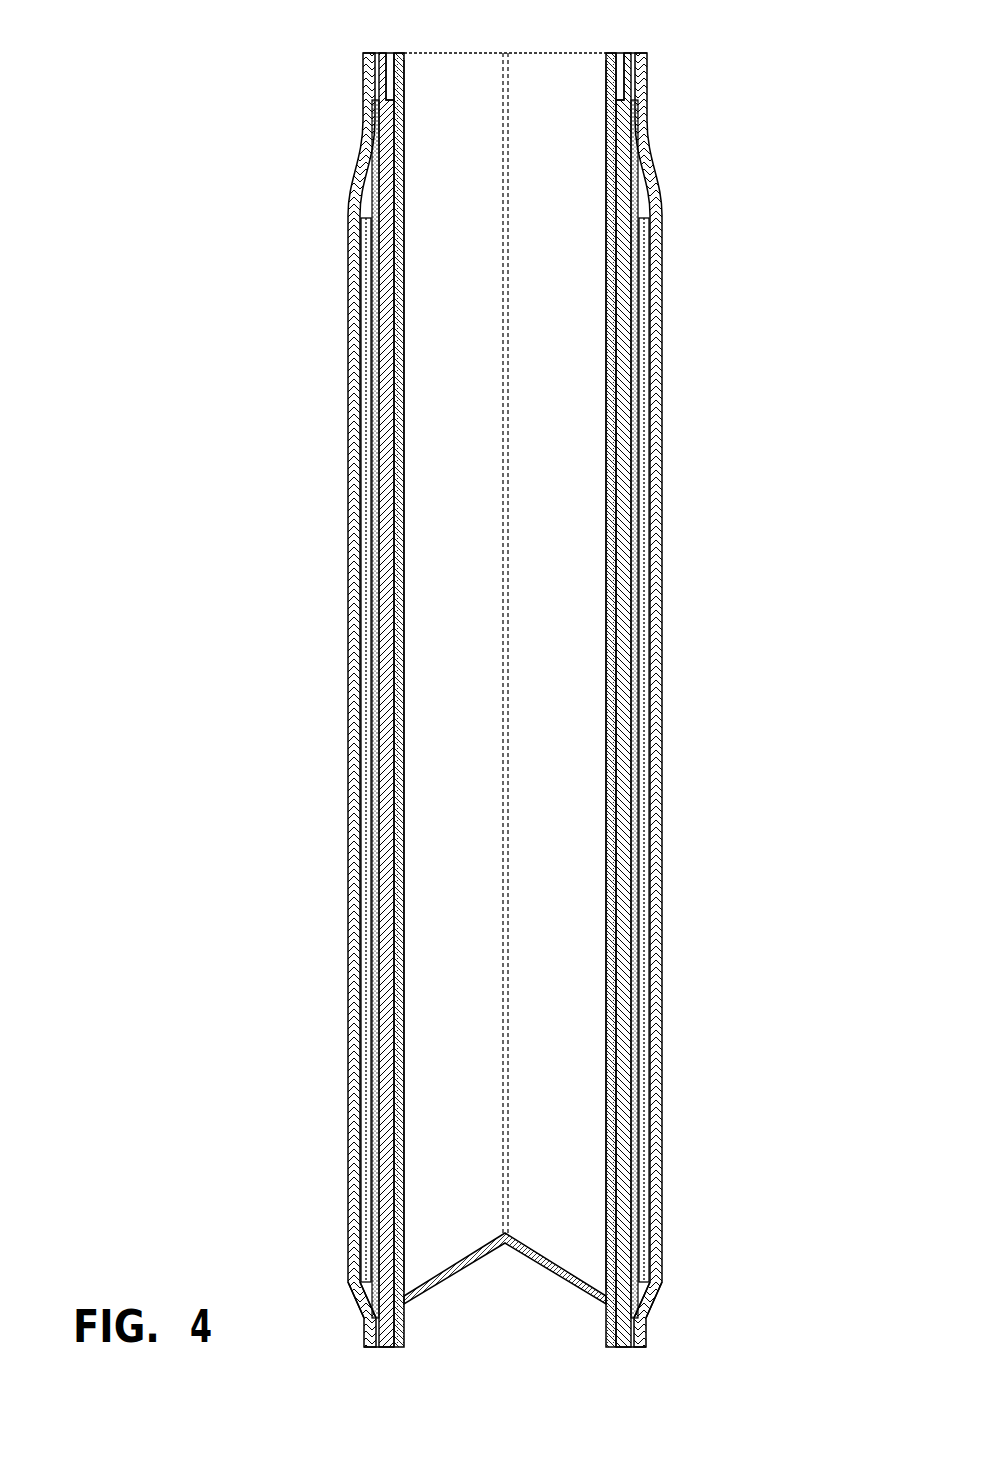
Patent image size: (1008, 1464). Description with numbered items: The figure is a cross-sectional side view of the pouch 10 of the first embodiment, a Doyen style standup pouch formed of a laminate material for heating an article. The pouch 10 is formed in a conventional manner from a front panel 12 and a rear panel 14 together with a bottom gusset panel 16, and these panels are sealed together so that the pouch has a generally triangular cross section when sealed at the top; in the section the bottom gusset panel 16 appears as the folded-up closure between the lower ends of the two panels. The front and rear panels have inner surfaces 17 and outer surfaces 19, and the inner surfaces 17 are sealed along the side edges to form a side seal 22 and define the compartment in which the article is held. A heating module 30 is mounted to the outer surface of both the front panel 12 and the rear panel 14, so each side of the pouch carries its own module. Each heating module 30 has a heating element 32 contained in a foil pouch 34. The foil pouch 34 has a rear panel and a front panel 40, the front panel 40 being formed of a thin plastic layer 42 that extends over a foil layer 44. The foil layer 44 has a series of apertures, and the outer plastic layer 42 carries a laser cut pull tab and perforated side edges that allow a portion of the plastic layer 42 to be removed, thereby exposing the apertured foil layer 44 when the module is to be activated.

The pouch 10 is at (772, 832).
The front panel 12 is at (607, 102).
The rear panel 14 is at (402, 90).
The bottom gusset panel 16 is at (553, 1266).
The inner surfaces 17 is at (608, 165).
The outer surfaces 19 is at (395, 72).
The side seal 22 is at (504, 615).
The heating module 30 is at (366, 553).
The heating element 32 is at (374, 760).
The foil pouch 34 is at (368, 1323).
The front panel of foil pouch 40 is at (392, 1346).
The plastic layer 42 is at (662, 632).
The foil layer 44 is at (660, 650).